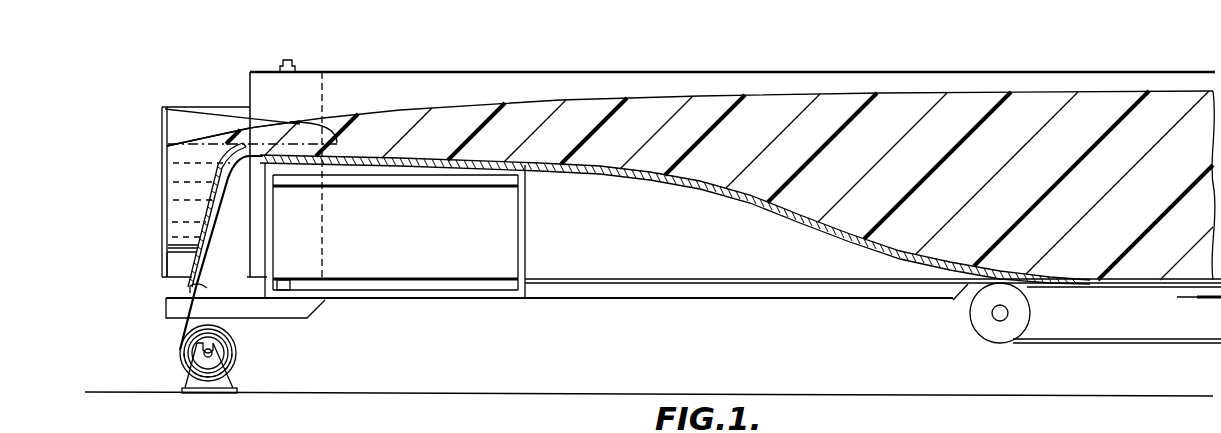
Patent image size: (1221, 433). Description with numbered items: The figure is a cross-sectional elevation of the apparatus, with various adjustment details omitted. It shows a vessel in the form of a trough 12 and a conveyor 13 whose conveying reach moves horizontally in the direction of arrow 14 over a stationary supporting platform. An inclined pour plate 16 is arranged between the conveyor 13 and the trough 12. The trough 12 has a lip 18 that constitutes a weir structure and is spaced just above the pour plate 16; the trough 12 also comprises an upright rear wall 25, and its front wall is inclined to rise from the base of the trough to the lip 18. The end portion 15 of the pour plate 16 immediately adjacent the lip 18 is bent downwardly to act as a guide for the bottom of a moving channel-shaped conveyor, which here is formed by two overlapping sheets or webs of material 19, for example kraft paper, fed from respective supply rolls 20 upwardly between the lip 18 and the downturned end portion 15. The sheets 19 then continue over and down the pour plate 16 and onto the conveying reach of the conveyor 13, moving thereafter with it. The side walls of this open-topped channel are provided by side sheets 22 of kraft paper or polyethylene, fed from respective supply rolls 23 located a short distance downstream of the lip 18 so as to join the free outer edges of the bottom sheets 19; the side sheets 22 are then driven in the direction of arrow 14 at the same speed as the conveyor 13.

The trough 12 is at (183, 198).
The conveyor 13 is at (1053, 291).
The arrow 14 is at (1185, 296).
The end portion of the pour plate 15 is at (240, 165).
The pour plate 16 is at (723, 200).
The lip 18 is at (170, 148).
The sheets or webs of material 19 is at (185, 290).
The supply rolls 20 is at (238, 348).
The side sheets 22 is at (343, 88).
The supply rolls 23 is at (255, 98).
The upright rear wall 25 is at (160, 230).